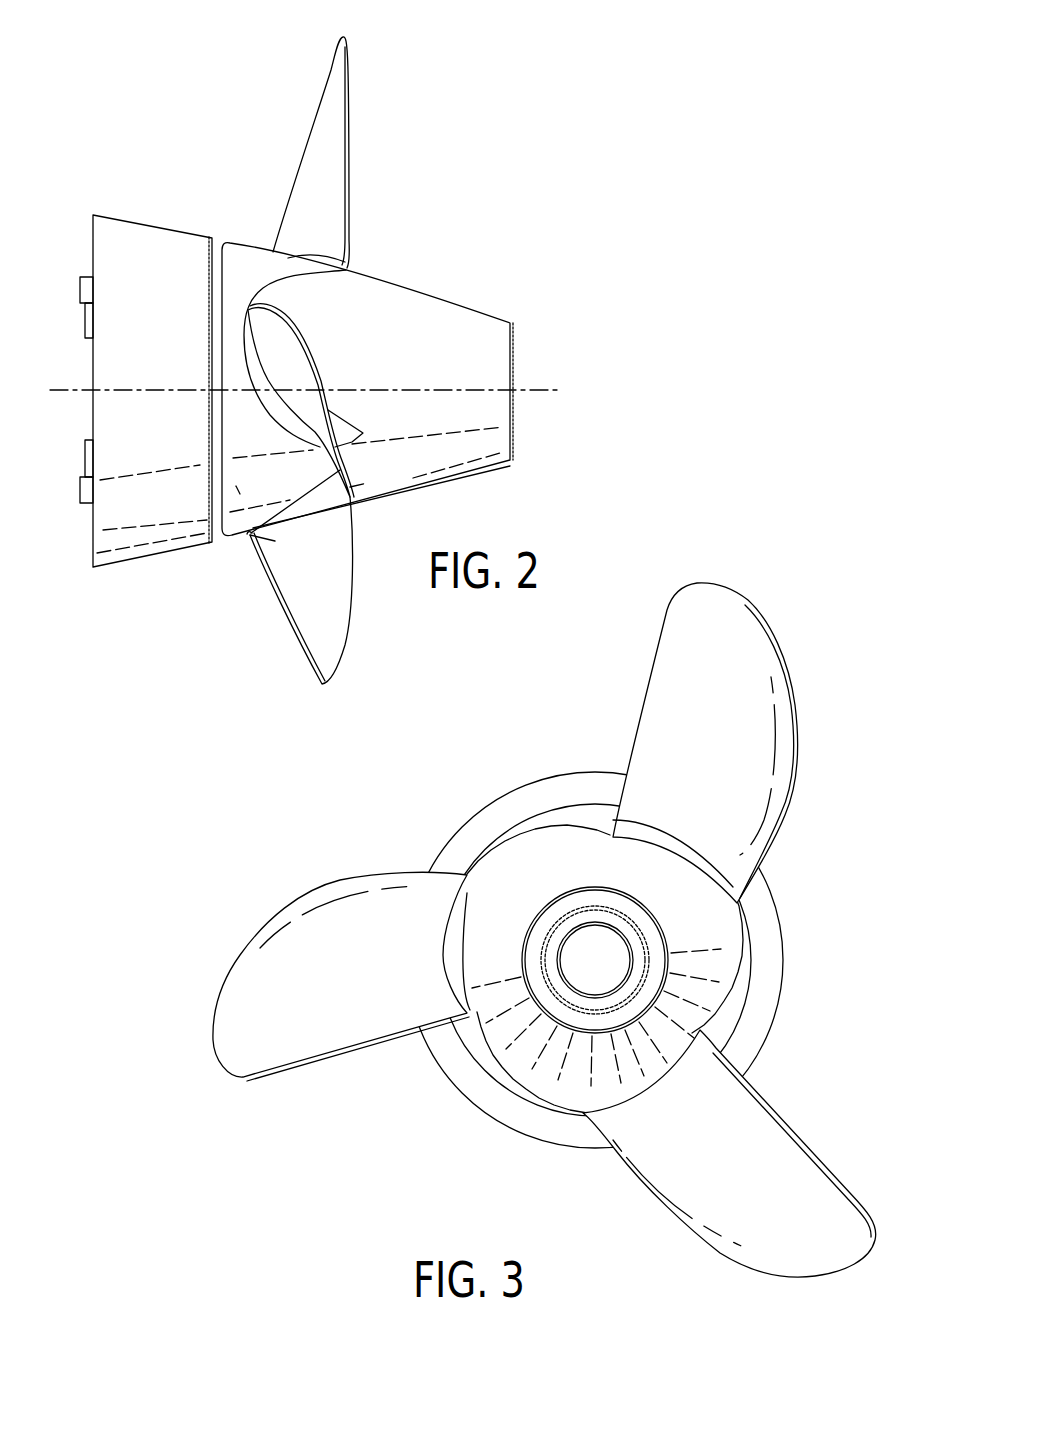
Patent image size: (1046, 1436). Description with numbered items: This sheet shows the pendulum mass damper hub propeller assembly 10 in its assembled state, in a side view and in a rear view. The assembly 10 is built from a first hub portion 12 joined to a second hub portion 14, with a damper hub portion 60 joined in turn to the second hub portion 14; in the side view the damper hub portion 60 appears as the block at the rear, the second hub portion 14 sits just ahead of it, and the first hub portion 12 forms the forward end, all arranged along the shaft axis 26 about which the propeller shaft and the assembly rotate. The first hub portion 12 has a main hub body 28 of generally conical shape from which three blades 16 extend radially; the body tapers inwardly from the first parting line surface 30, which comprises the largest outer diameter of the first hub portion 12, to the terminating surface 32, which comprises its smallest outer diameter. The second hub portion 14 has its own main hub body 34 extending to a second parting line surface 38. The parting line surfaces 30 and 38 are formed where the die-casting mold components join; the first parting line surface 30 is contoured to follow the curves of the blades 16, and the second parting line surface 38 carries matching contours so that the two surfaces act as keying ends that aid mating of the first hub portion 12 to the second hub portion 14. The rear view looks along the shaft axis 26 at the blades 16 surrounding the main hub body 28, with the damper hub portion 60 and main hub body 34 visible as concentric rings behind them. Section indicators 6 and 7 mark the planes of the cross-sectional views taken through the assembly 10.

In FIG. 2, the propeller assembly 10 is at (118, 135).
In FIG. 3, the propeller assembly 10 is at (837, 690).
In FIG. 2, the first hub portion 12 is at (548, 367).
In FIG. 2, the second hub portion 14 is at (366, 342).
In FIG. 2, the blades 16 is at (350, 110).
In FIG. 3, the blades 16 is at (240, 1078).
In FIG. 2, the shaft axis 26 is at (535, 392).
In FIG. 2, the main hub body 28 is at (440, 323).
In FIG. 3, the main hub body 28 is at (713, 912).
In FIG. 2, the first parting line surface 30 is at (297, 282).
In FIG. 2, the terminating surface 32 is at (512, 356).
In FIG. 3, the terminating surface 32 is at (555, 1010).
In FIG. 2, the main hub body 34 is at (237, 488).
In FIG. 3, the main hub body 34 is at (563, 820).
In FIG. 2, the second parting line surface 38 is at (267, 512).
In FIG. 2, the damper hub portion 60 is at (165, 256).
In FIG. 3, the damper hub portion 60 is at (748, 1052).
In FIG. 3, the section line 6 is at (591, 996).
In FIG. 2, the section line 7 is at (101, 394).